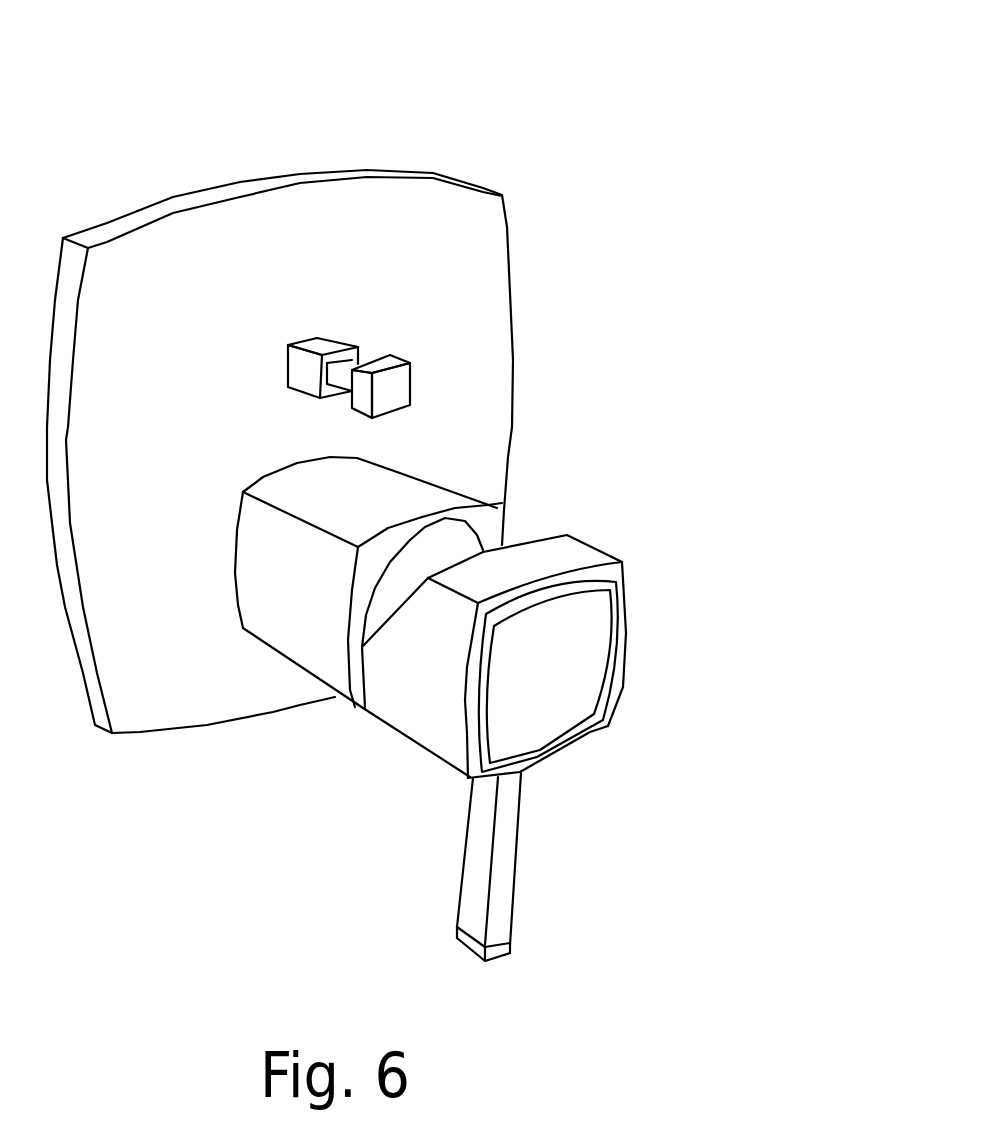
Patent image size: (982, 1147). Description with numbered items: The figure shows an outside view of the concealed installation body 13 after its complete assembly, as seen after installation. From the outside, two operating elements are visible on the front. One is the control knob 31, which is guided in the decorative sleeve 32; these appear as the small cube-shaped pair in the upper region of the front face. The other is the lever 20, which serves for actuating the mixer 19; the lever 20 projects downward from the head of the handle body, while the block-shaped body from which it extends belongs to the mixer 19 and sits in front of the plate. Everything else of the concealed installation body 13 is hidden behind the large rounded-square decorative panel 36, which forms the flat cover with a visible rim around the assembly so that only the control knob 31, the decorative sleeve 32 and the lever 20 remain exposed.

The concealed installation body 13 is at (348, 483).
The mixer 19 is at (330, 722).
The lever 20 is at (508, 852).
The control knob 31 is at (395, 385).
The decorative sleeve 32 is at (320, 338).
The decorative panel 36 is at (510, 248).